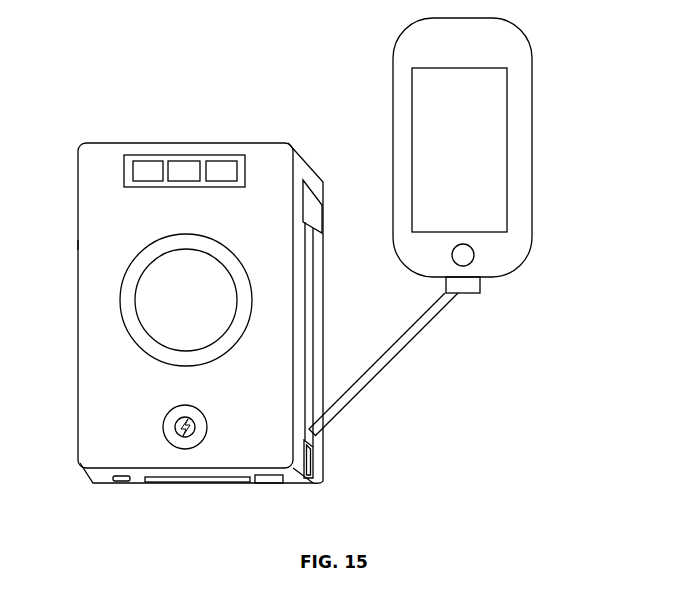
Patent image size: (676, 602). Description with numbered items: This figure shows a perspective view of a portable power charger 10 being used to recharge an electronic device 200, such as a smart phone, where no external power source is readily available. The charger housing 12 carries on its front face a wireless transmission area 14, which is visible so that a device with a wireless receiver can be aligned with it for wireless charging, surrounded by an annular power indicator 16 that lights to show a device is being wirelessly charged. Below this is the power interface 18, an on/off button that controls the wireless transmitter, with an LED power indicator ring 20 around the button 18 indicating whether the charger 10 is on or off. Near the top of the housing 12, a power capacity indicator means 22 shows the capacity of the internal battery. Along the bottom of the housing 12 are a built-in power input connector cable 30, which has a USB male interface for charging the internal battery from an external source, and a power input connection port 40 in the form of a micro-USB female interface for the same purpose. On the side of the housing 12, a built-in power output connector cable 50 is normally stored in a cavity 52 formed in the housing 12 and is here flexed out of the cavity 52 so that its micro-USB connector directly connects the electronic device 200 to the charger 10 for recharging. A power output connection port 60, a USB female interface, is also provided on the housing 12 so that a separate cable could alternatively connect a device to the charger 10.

The portable power charger 10 is at (93, 133).
The charger housing 12 is at (98, 243).
The wireless transmission area 14 is at (160, 327).
The power indicator 16 is at (120, 299).
The power interface 18 is at (188, 417).
The LED power indicator ring 20 is at (184, 421).
The power capacity indicator means 22 is at (218, 155).
The power input connector cable 30 is at (268, 481).
The power input connection port 40 is at (122, 481).
The power output connector cable 50 is at (390, 363).
The cavity 52 is at (317, 208).
The power output connection port 60 is at (320, 458).
The electronic device 200 is at (518, 193).